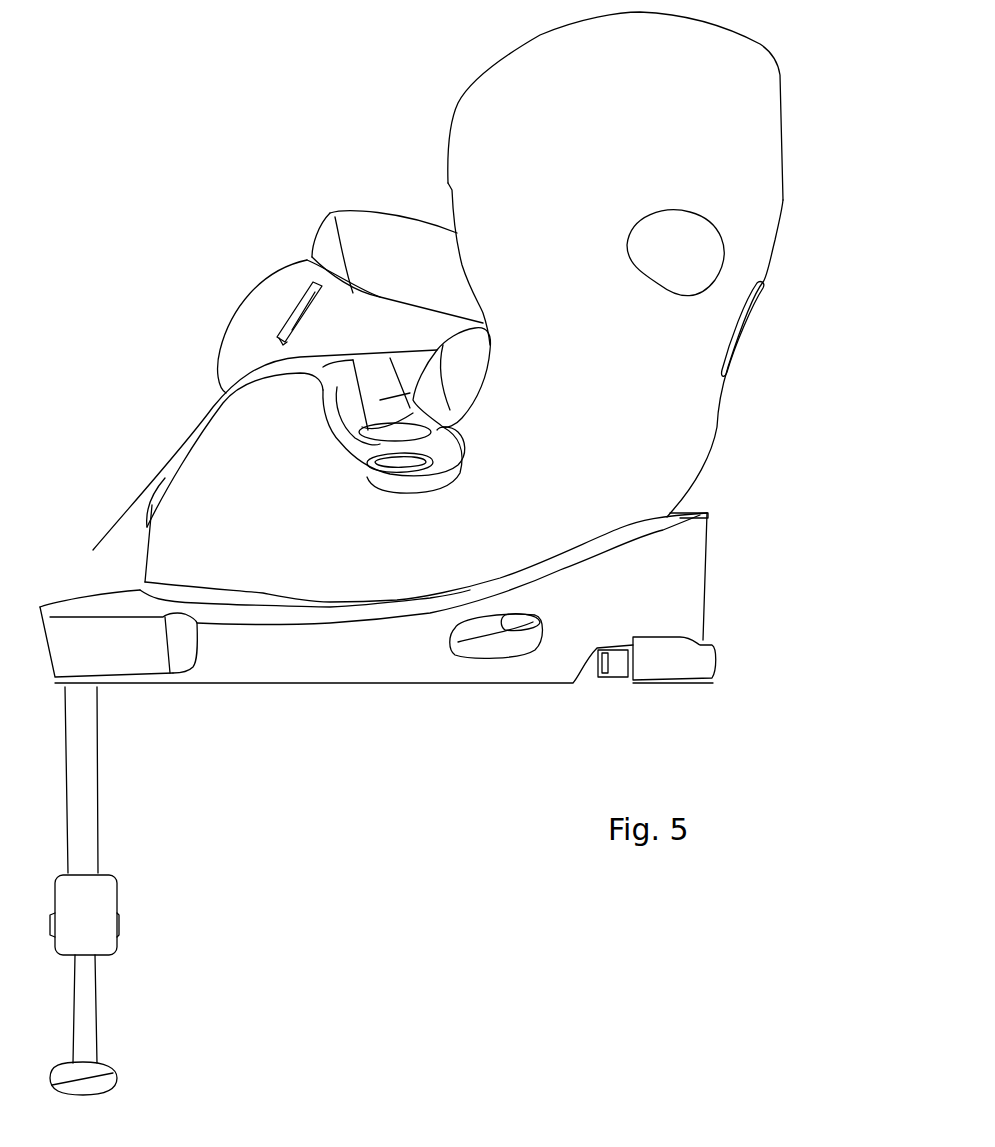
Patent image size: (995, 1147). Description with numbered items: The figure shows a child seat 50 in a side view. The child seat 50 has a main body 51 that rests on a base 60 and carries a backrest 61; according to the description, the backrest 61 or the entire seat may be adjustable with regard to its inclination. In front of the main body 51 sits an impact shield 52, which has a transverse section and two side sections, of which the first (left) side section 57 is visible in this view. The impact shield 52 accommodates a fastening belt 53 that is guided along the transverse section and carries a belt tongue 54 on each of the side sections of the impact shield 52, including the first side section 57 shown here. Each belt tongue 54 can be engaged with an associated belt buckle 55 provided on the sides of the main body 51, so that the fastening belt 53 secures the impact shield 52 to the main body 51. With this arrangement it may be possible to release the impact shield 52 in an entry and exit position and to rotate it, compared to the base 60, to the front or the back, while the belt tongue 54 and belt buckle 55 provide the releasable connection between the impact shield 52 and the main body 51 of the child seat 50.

The child seat 50 is at (140, 194).
The main body 51 is at (682, 437).
The impact shield 52 is at (258, 310).
The fastening belt 53 is at (440, 336).
The belt tongue 54 is at (460, 447).
The belt buckle 55 is at (363, 470).
The first side section 57 is at (375, 320).
The base 60 is at (637, 593).
The backrest 61 is at (768, 218).